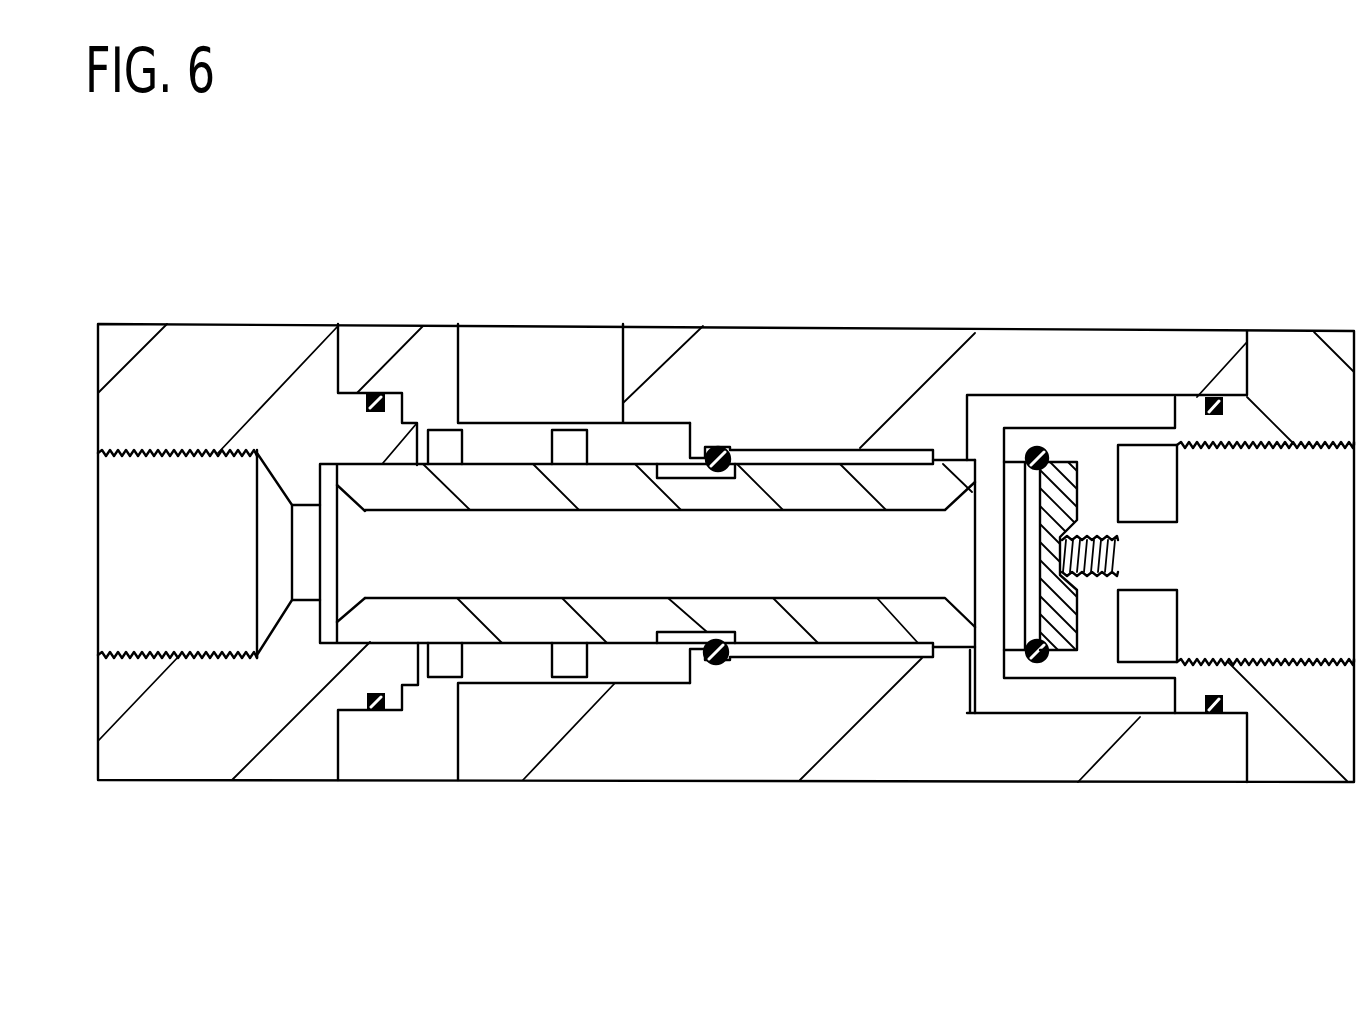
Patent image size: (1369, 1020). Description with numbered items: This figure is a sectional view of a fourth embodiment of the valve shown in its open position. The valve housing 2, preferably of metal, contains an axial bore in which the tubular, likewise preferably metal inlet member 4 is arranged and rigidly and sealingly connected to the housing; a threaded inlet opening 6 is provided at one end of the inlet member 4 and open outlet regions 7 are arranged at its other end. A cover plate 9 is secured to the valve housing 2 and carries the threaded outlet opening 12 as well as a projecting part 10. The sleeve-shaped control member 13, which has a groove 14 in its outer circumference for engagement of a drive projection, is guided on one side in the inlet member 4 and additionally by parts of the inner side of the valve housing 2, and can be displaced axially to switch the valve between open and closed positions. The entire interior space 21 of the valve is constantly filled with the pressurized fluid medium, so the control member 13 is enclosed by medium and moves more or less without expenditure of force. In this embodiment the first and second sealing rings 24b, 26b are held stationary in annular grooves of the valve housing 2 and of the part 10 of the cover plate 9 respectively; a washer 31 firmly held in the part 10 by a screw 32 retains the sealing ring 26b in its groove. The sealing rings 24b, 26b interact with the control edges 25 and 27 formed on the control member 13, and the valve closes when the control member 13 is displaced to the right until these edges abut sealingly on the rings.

The valve housing 2 is at (433, 770).
The inlet member 4 is at (217, 762).
The inlet opening 6 is at (172, 450).
The outlet regions 7 is at (1137, 470).
The cover plate 9 is at (1298, 397).
The projecting part 10 is at (1110, 613).
The outlet opening 12 is at (1285, 657).
The control member 13 is at (517, 627).
The groove 14 is at (465, 445).
The interior space 21 is at (792, 590).
The first sealing ring 24b is at (727, 440).
The control edge 25 is at (660, 460).
The second sealing ring 26b is at (1043, 449).
The control edge 27 is at (991, 458).
The washer 31 is at (1062, 640).
The screw 32 is at (1093, 607).